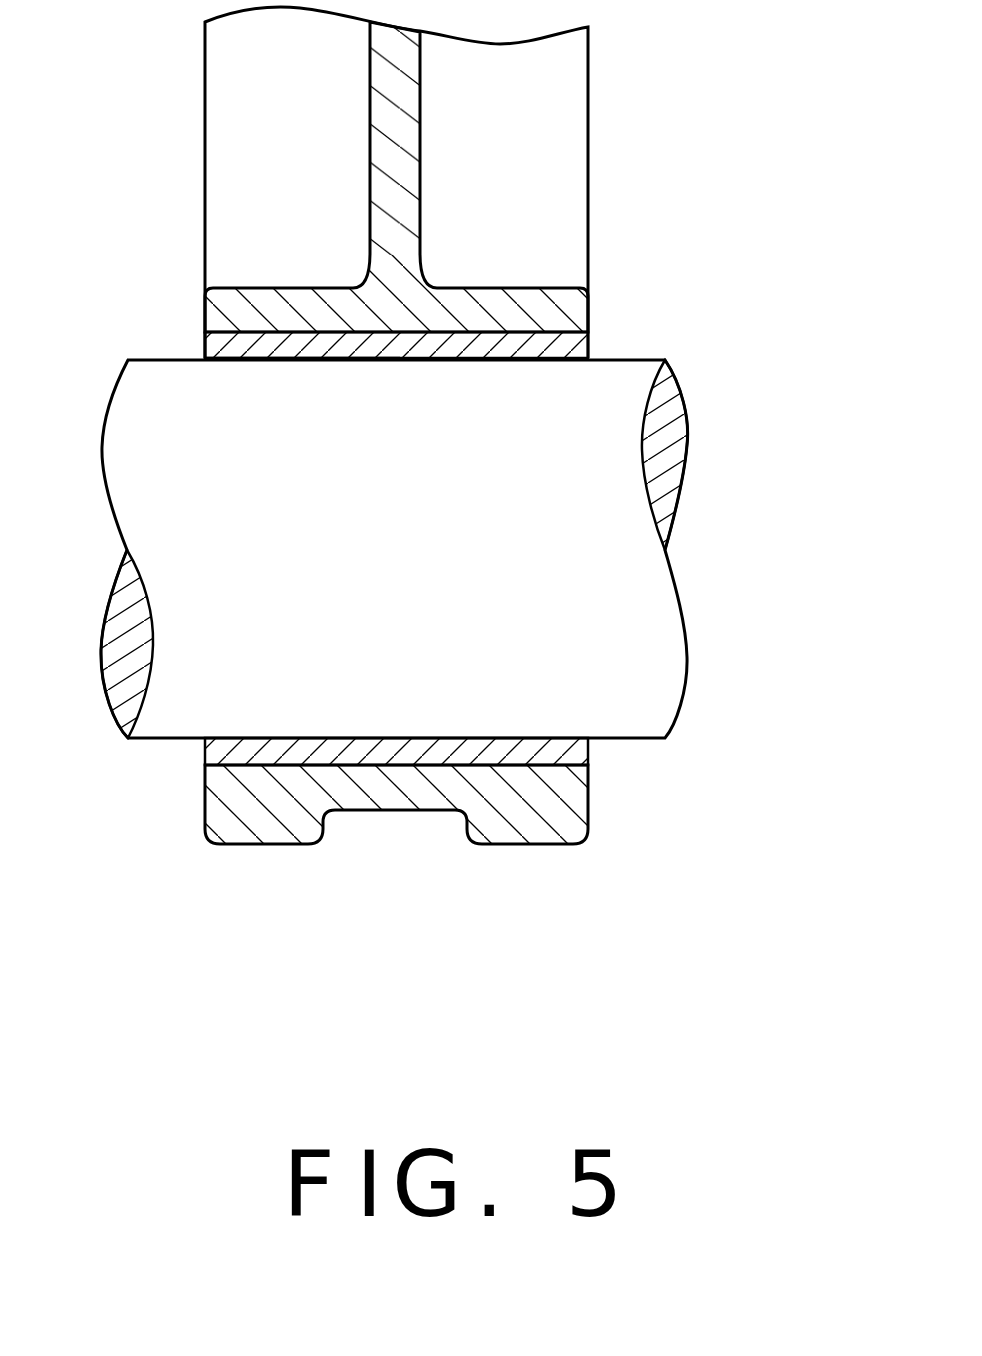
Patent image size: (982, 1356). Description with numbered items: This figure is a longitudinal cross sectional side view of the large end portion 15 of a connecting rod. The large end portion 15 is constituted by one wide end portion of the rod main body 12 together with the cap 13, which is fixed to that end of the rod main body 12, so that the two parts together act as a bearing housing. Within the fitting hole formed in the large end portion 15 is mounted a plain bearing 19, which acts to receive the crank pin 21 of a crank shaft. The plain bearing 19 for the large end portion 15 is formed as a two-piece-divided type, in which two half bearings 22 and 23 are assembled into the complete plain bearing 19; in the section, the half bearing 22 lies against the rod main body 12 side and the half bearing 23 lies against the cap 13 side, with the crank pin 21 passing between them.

The rod main body 12 is at (589, 117).
The cap 13 is at (590, 807).
The large end portion 15 is at (603, 300).
The plain bearing 19 is at (608, 337).
The crank pin 21 is at (657, 657).
The half bearing 22 is at (204, 348).
The half bearing 23 is at (204, 748).